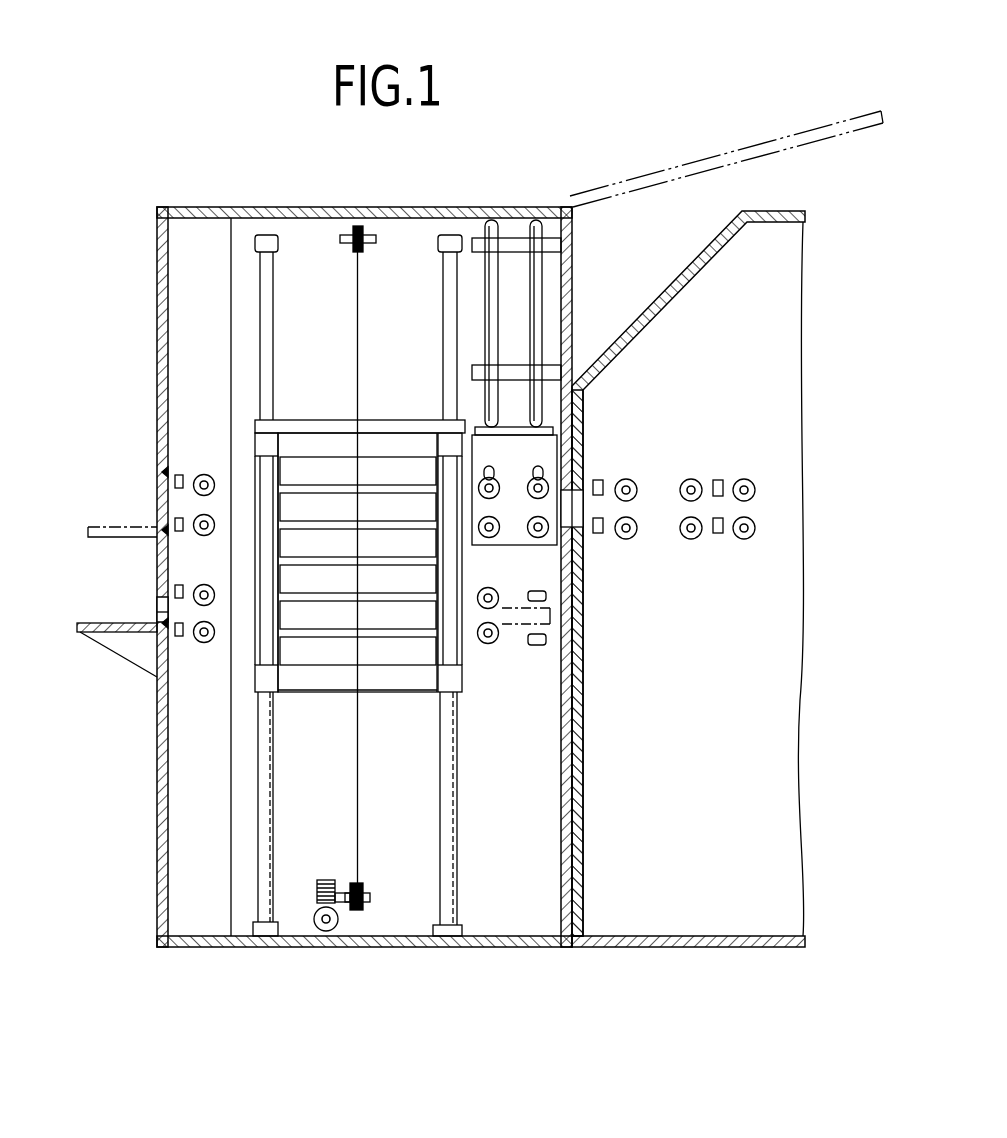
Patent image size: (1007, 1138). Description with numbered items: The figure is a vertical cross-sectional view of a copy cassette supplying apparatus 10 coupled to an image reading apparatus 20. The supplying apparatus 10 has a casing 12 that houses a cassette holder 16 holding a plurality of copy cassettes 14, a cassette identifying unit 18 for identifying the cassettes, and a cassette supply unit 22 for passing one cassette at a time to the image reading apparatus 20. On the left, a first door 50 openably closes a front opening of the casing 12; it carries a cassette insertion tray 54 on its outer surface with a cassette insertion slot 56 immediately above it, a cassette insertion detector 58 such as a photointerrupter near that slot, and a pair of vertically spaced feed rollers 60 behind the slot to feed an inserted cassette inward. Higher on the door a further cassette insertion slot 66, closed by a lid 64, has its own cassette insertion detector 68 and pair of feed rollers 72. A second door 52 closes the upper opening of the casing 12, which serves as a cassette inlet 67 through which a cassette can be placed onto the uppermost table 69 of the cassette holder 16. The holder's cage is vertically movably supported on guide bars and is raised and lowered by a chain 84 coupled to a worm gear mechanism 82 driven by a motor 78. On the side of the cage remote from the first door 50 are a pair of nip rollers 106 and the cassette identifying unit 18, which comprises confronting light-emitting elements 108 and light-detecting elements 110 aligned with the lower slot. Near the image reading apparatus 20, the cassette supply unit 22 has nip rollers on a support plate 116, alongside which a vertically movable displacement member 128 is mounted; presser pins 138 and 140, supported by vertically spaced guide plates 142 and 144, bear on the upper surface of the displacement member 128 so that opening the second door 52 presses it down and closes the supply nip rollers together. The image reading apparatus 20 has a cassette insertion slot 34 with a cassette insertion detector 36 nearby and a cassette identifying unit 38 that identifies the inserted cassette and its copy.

The copy cassette supplying apparatus 10 is at (469, 553).
The casing 12 is at (462, 946).
The copy cassette 14 is at (290, 617).
The cassette holder 16 is at (402, 699).
The cassette identifying unit 18 is at (563, 590).
The image reading apparatus 20 is at (695, 615).
The cassette supply unit 22 is at (551, 450).
The cassette insertion slot 34 is at (585, 512).
The cassette insertion detector 36 is at (598, 468).
The cassette identifying unit 38 is at (715, 468).
The first door 50 is at (196, 242).
The second door 52 is at (424, 212).
The cassette insertion tray 54 is at (98, 631).
The cassette insertion slot 56 is at (157, 612).
The cassette insertion detector 58 is at (184, 540).
The feed rollers 60 is at (210, 526).
The lid 64 is at (157, 497).
The cassette insertion slot 66 is at (157, 472).
The cassette inlet 67 is at (233, 216).
The cassette insertion detector 68 is at (180, 473).
The uppermost table 69 is at (303, 418).
The feed rollers 72 is at (205, 474).
The motor 78 is at (333, 926).
The worm gear mechanism 82 is at (333, 870).
The chain 84 is at (358, 803).
The nip rollers 106 is at (488, 642).
The light-emitting elements 108 is at (546, 597).
The light-detecting elements 110 is at (546, 640).
The support plate 116 is at (511, 545).
The displacement member 128 is at (473, 425).
The presser pin 138 is at (498, 272).
The presser pin 140 is at (535, 305).
The guide plate 142 is at (555, 249).
The guide plate 144 is at (553, 374).